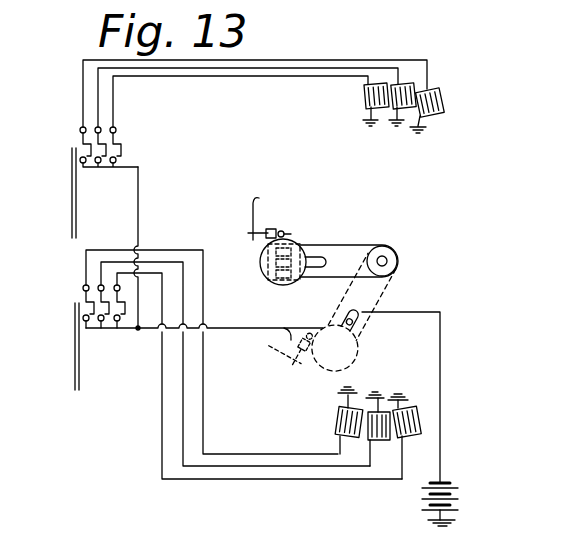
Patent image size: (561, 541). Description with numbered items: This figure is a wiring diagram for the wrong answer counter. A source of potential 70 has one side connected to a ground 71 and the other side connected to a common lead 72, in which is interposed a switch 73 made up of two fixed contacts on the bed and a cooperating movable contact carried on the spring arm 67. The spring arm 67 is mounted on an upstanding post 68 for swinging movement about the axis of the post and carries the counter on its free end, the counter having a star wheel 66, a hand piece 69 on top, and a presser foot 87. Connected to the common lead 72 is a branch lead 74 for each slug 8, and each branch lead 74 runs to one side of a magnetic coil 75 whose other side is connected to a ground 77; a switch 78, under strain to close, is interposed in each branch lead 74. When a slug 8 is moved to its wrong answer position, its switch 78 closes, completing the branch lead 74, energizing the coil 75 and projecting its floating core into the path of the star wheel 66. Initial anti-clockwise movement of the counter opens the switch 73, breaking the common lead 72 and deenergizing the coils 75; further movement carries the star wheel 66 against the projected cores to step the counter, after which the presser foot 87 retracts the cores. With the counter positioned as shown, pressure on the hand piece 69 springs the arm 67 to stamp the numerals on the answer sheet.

The slug 8 is at (72, 202).
The star wheel 66 is at (252, 240).
The spring arm 67 is at (350, 257).
The upstanding post 68 is at (397, 261).
The hand piece 69 is at (285, 286).
The source of potential 70 is at (458, 497).
The ground 71 is at (438, 522).
The common lead 72 is at (140, 214).
The switch 73 is at (318, 253).
The branch lead 74 is at (305, 58).
The magnetic coil 75 is at (365, 98).
The ground 77 is at (372, 127).
The switch 78 is at (86, 144).
The presser foot 87 is at (250, 207).